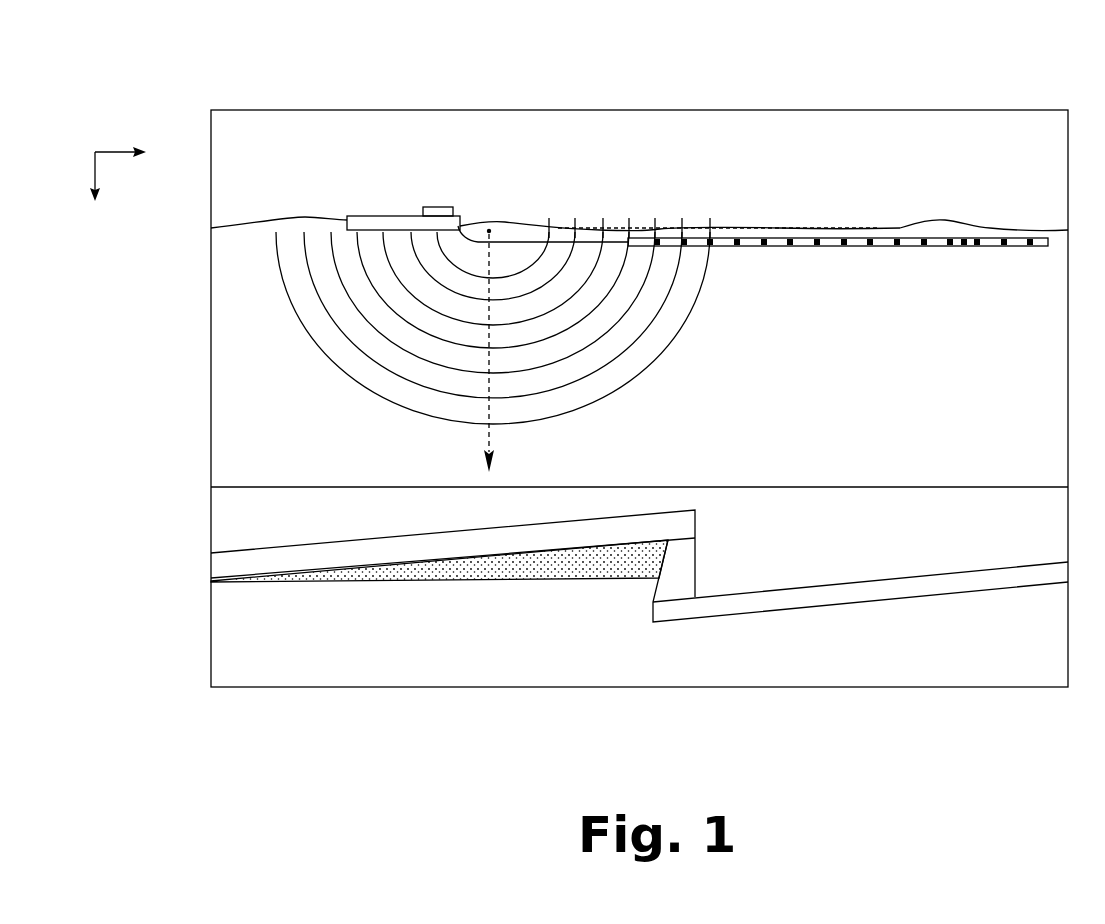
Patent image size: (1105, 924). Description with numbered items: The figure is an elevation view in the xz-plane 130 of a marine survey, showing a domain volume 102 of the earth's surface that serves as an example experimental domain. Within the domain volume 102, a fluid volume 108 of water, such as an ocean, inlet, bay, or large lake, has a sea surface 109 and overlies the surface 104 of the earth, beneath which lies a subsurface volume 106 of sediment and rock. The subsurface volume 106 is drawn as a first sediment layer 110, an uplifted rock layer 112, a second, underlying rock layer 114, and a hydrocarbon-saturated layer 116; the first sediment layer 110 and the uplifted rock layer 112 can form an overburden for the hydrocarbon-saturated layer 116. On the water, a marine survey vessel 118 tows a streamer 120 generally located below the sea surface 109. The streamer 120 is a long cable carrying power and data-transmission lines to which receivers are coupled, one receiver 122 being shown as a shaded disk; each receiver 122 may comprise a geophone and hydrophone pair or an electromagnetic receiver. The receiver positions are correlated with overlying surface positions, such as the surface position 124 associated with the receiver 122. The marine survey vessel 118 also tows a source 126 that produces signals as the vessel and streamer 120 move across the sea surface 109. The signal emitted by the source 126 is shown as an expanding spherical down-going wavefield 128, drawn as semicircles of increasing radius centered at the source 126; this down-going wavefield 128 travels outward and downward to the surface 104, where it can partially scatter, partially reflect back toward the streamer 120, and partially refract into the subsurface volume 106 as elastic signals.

The domain volume 102 is at (122, 307).
The surface of the earth 104 is at (273, 487).
The subsurface volume 106 is at (230, 503).
The fluid volume 108 is at (232, 380).
The sea surface 109 is at (776, 226).
The first sediment layer 110 is at (931, 544).
The uplifted rock layer 112 is at (230, 566).
The second underlying rock layer 114 is at (346, 673).
The hydrocarbon-saturated layer 116 is at (440, 580).
The marine survey vessel 118 is at (393, 216).
The streamer 120 is at (830, 265).
The receiver 122 is at (965, 247).
The surface position 124 is at (962, 222).
The source 126 is at (489, 229).
The down-going wavefield 128 is at (672, 341).
The xz-plane 130 is at (95, 152).